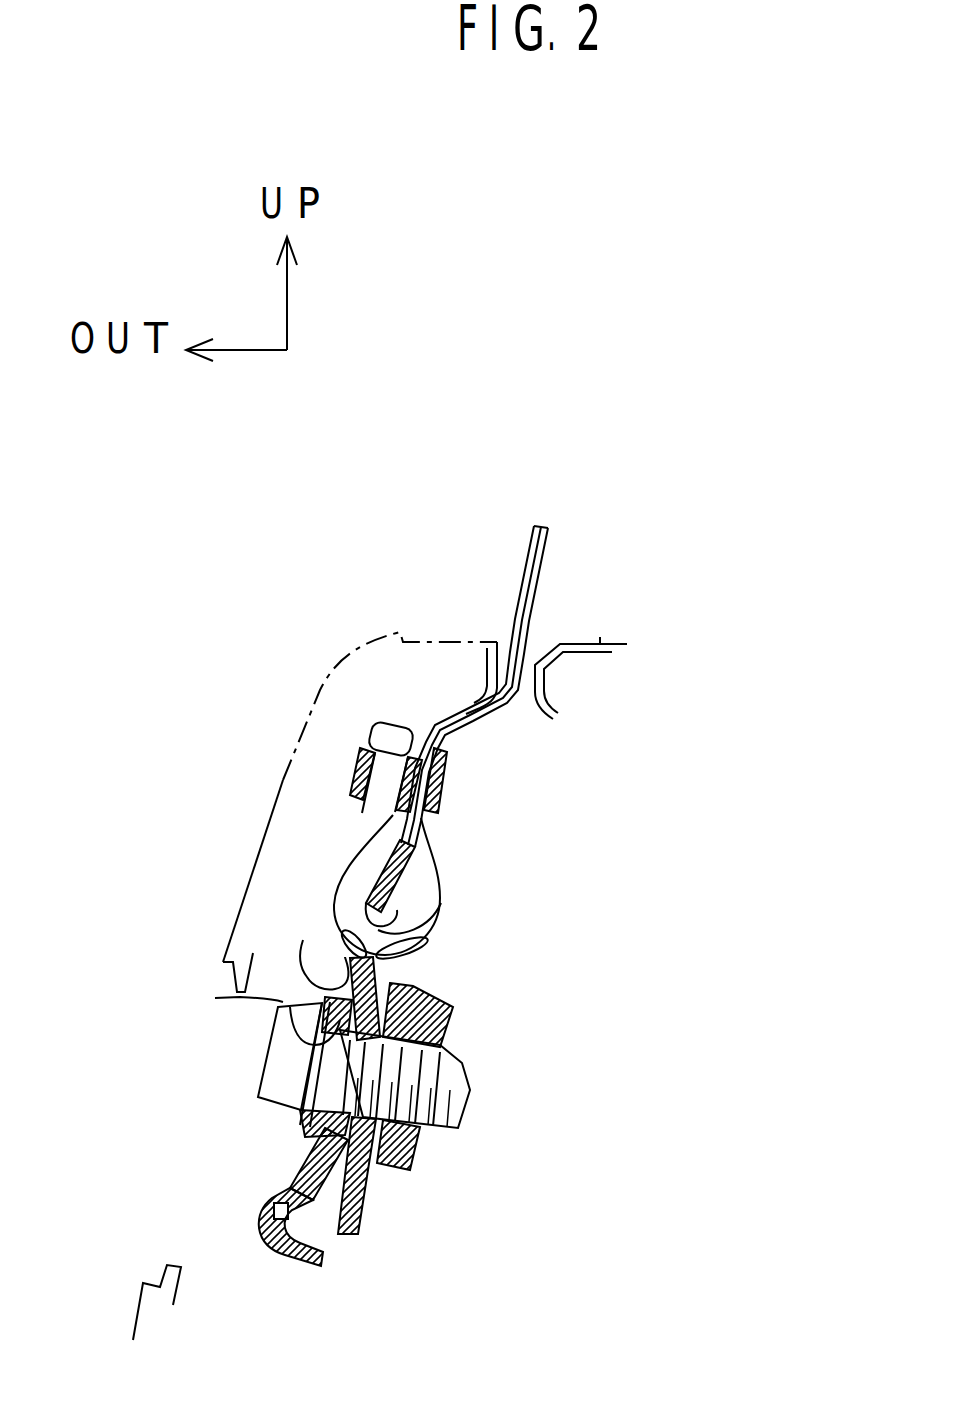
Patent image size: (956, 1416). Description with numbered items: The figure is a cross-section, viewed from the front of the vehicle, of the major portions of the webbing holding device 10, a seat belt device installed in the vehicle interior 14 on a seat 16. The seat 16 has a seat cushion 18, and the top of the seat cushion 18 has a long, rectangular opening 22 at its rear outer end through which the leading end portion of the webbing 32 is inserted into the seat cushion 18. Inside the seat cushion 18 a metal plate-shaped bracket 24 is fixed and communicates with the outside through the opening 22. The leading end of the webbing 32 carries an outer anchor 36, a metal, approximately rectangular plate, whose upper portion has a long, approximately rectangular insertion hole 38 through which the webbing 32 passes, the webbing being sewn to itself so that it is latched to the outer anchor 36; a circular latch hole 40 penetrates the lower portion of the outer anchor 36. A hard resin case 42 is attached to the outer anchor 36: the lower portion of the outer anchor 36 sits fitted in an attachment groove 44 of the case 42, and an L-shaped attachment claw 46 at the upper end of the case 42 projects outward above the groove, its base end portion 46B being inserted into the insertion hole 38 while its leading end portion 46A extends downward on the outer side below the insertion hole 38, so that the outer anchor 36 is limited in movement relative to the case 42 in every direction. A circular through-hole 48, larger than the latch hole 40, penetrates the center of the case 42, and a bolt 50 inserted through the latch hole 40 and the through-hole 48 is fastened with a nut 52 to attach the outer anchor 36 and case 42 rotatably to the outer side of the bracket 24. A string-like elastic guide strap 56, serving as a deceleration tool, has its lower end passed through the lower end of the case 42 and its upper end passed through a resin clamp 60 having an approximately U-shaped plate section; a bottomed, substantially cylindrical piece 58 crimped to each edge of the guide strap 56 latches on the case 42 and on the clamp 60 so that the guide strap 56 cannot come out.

The webbing holding device 10 is at (322, 568).
The vehicle interior 14 is at (730, 542).
The seat 16 is at (581, 681).
The seat cushion 18 is at (598, 645).
The opening 22 is at (535, 650).
The bracket 24 is at (342, 1237).
The webbing 32 is at (537, 543).
The outer anchor 36 is at (410, 835).
The insertion hole 38 is at (405, 935).
The latch hole 40 is at (215, 998).
The case 42 is at (283, 1262).
The attachment groove 44 is at (262, 1230).
The attachment claw 46 is at (428, 942).
The leading end portion 46A is at (338, 936).
The base end portion 46B is at (341, 934).
The through-hole 48 is at (330, 1152).
The bolt 50 is at (262, 1053).
The nut 52 is at (442, 1003).
The guide strap 56 is at (352, 812).
The piece 58 is at (397, 720).
The clamp 60 is at (450, 750).